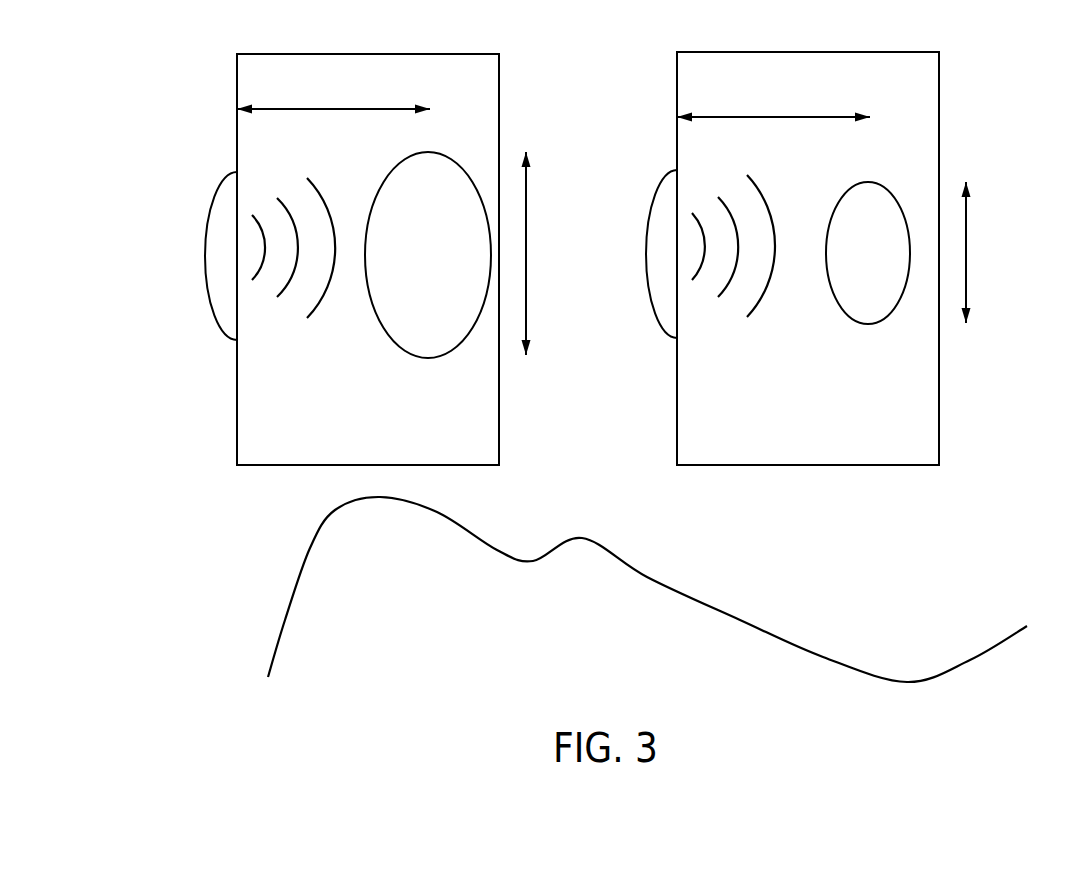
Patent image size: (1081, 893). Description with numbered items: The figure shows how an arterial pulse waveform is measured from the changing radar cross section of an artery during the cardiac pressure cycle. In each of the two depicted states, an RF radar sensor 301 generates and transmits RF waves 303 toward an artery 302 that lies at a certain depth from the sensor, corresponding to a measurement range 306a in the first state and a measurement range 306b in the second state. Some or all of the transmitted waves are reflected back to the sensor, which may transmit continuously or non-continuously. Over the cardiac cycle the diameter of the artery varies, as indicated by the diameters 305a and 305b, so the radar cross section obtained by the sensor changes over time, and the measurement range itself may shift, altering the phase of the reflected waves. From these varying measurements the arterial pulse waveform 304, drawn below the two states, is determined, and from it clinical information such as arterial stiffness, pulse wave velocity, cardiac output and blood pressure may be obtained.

The RF radar sensor 301 is at (208, 228).
The artery 302 is at (445, 202).
The RF waves 303 is at (280, 282).
The arterial pulse waveform 304 is at (845, 643).
The artery diameter 305a is at (526, 252).
The artery diameter 305b is at (966, 250).
The measurement range 306a is at (275, 109).
The measurement range 306b is at (723, 118).